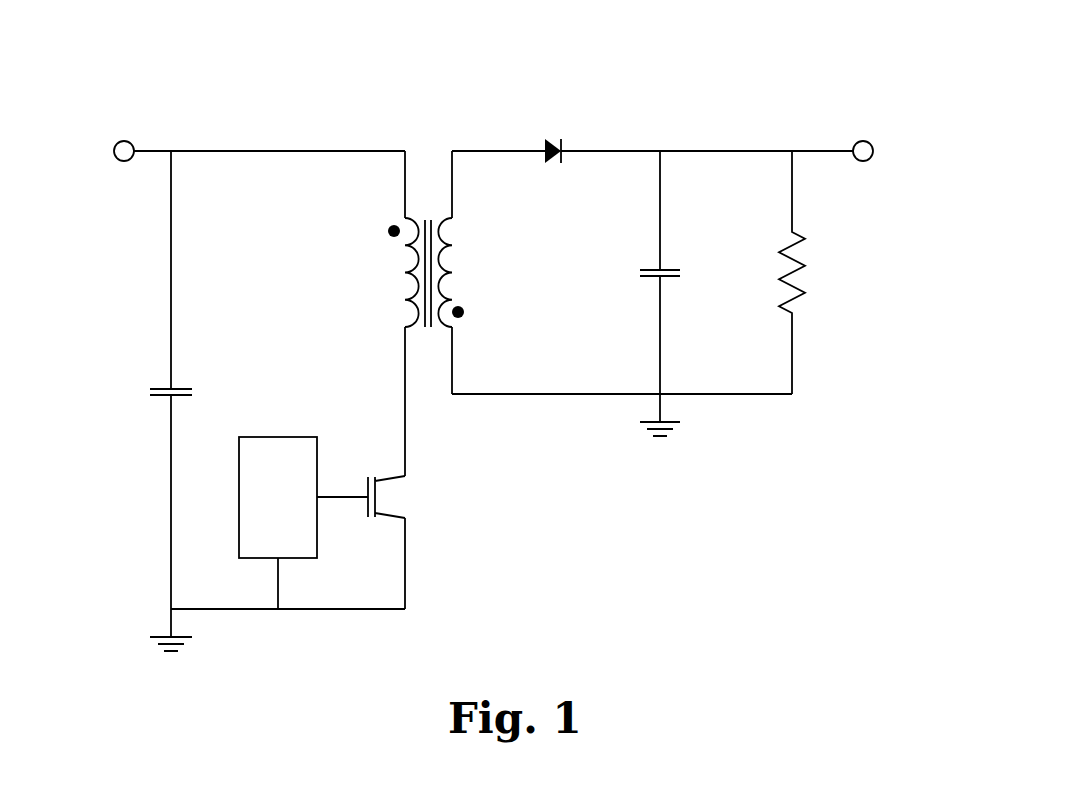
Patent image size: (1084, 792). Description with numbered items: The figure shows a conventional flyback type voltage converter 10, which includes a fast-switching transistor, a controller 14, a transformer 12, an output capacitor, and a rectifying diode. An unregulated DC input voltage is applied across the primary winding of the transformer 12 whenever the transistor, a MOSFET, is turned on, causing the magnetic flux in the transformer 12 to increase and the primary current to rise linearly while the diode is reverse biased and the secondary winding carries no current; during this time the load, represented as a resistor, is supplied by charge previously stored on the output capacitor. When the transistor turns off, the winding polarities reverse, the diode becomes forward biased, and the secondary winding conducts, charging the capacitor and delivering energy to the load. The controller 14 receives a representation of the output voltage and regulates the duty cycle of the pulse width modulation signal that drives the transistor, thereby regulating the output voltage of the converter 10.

The converter 10 is at (765, 78).
The transformer 12 is at (424, 202).
The controller 14 is at (297, 437).